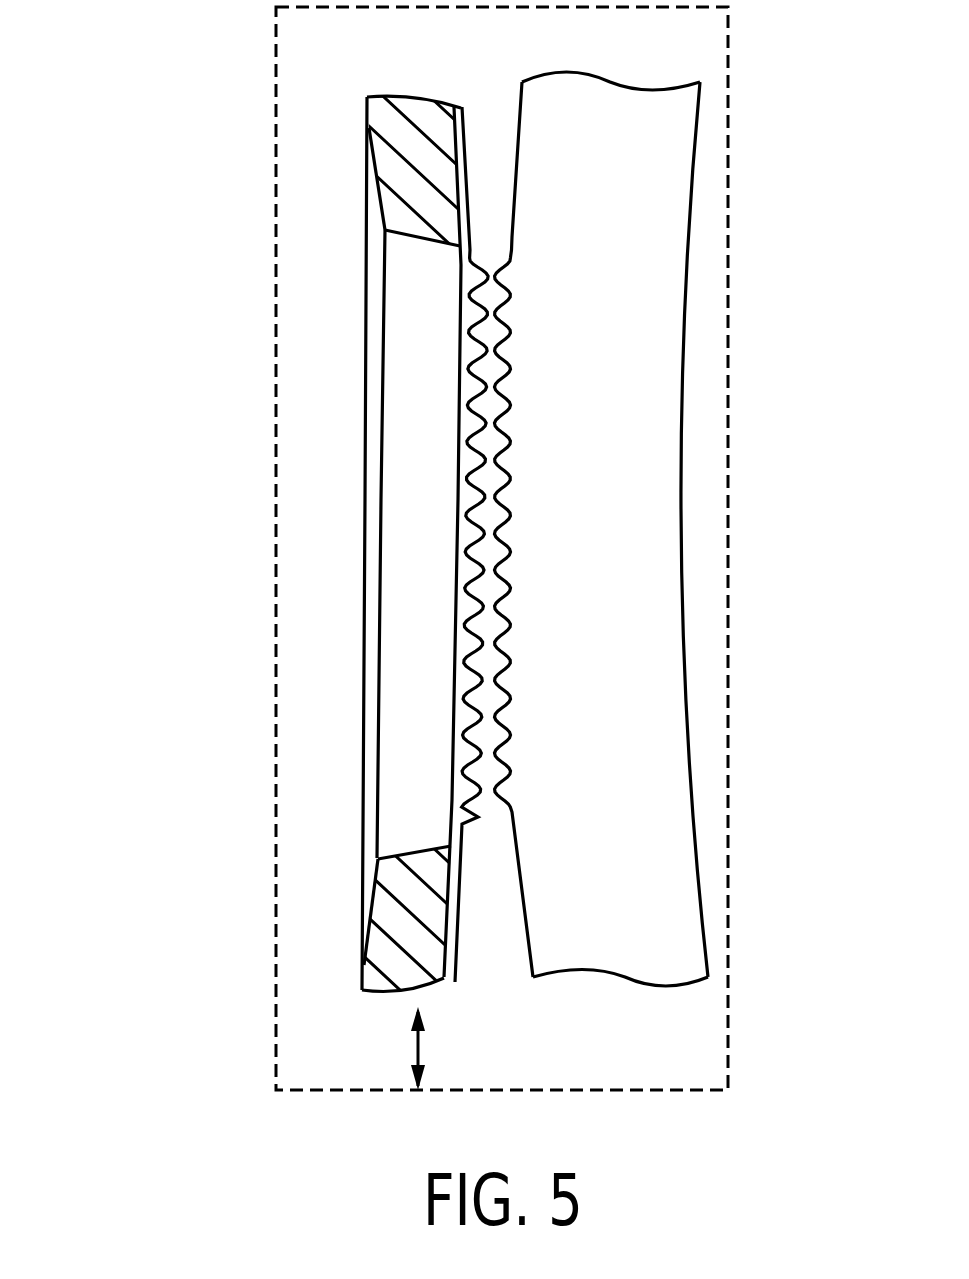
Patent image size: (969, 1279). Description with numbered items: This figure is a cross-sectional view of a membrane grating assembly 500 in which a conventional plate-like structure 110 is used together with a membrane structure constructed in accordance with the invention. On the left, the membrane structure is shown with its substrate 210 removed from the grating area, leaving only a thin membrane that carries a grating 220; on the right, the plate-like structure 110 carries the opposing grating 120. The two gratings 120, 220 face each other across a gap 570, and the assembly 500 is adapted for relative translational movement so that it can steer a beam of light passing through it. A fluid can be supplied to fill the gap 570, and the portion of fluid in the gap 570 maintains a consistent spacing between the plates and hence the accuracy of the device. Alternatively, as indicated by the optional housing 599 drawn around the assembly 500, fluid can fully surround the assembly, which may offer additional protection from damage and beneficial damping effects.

The plate-like structure 110 is at (645, 303).
The grating 120 is at (497, 485).
The substrate 210 is at (420, 122).
The grating 220 is at (457, 550).
The membrane grating assembly 500 is at (140, 106).
The gap 570 is at (474, 934).
The housing 599 is at (733, 714).